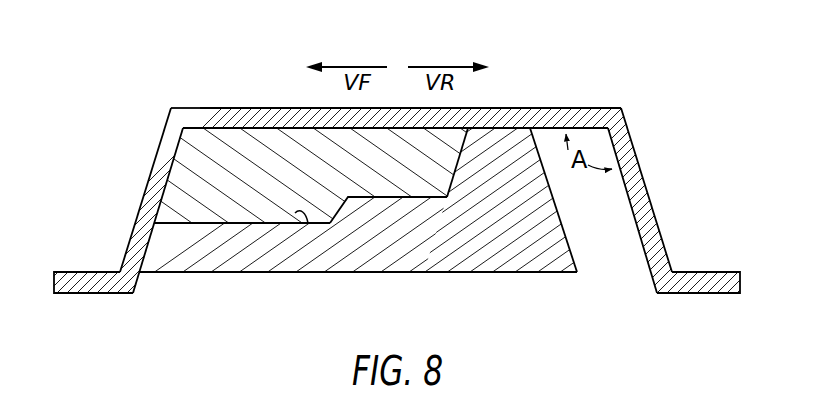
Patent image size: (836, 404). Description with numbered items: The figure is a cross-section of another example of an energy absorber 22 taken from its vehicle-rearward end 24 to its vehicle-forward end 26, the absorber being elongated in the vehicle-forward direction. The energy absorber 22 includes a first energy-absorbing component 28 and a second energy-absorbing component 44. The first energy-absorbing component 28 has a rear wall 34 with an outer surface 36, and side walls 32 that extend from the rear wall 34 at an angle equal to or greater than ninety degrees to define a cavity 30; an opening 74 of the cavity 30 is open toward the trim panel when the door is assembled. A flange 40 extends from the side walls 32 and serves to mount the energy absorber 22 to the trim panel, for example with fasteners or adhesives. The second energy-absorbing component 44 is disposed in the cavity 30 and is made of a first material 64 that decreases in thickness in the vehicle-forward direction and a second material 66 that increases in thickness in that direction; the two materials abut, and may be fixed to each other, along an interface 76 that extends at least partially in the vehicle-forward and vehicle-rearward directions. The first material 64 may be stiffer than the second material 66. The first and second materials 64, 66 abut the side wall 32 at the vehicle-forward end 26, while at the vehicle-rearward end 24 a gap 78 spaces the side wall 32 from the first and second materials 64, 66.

The energy absorber 22 is at (423, 202).
The vehicle-rearward end 24 is at (423, 183).
The vehicle-forward end 26 is at (139, 186).
The first energy-absorbing component 28 is at (168, 103).
The cavity 30 is at (338, 279).
The side walls 32 is at (164, 196).
The rear wall 34 is at (285, 136).
The outer surface 36 is at (518, 104).
The flange 40 is at (75, 261).
The second energy-absorbing component 44 is at (448, 203).
The first material 64 is at (548, 279).
The second material 66 is at (349, 211).
The opening 74 is at (173, 283).
The interface 76 is at (295, 213).
The gap 78 is at (613, 238).